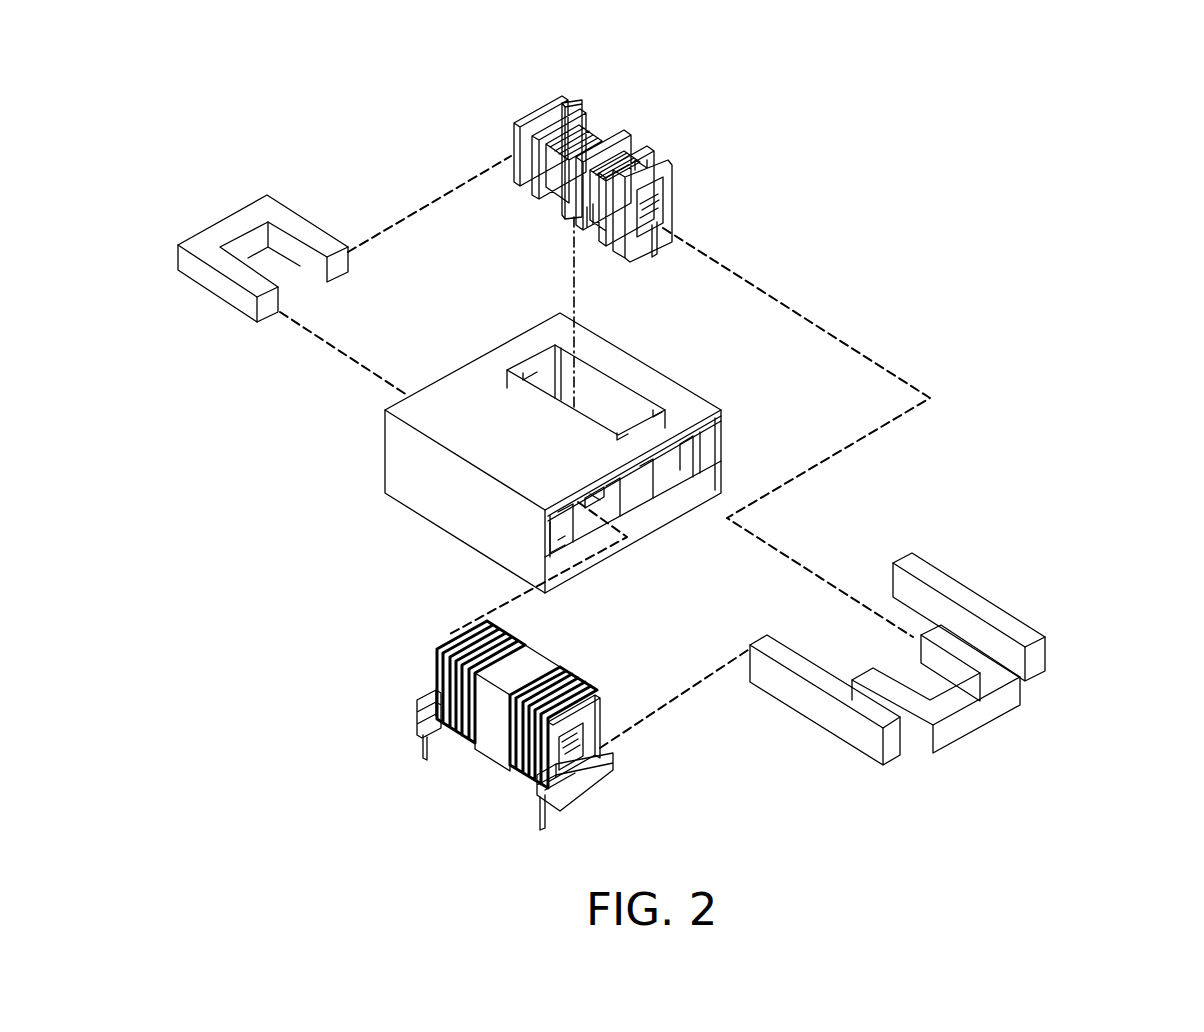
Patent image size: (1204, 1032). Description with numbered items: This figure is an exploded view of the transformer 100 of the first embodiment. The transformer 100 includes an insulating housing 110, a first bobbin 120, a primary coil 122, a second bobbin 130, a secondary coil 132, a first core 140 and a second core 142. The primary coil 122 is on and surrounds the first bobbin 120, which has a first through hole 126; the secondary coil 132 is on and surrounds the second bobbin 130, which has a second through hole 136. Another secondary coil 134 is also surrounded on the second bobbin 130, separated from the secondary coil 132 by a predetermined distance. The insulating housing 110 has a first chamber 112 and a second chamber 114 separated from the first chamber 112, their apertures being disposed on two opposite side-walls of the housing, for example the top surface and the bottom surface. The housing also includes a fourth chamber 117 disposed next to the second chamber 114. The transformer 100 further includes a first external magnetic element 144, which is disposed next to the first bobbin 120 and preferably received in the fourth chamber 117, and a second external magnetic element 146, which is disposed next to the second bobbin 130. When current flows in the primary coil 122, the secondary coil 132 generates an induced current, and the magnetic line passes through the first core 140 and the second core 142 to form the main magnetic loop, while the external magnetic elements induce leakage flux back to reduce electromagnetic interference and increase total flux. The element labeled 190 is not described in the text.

The transformer 100 is at (1172, 70).
The insulating housing 110 is at (687, 459).
The first chamber 112 is at (604, 390).
The second chamber 114 is at (584, 500).
The fourth chamber 117 is at (713, 441).
The slot 190 is at (558, 546).
The first bobbin 120 is at (734, 171).
The primary coil 122 is at (658, 149).
The first through hole 126 is at (656, 208).
The second bobbin 130 is at (506, 726).
The secondary coil 132 is at (500, 623).
The secondary coil 134 is at (567, 669).
The second through hole 136 is at (571, 752).
The first core 140 is at (213, 232).
The second core 142 is at (984, 711).
The first external magnetic element 144 is at (1044, 655).
The second external magnetic element 146 is at (890, 752).